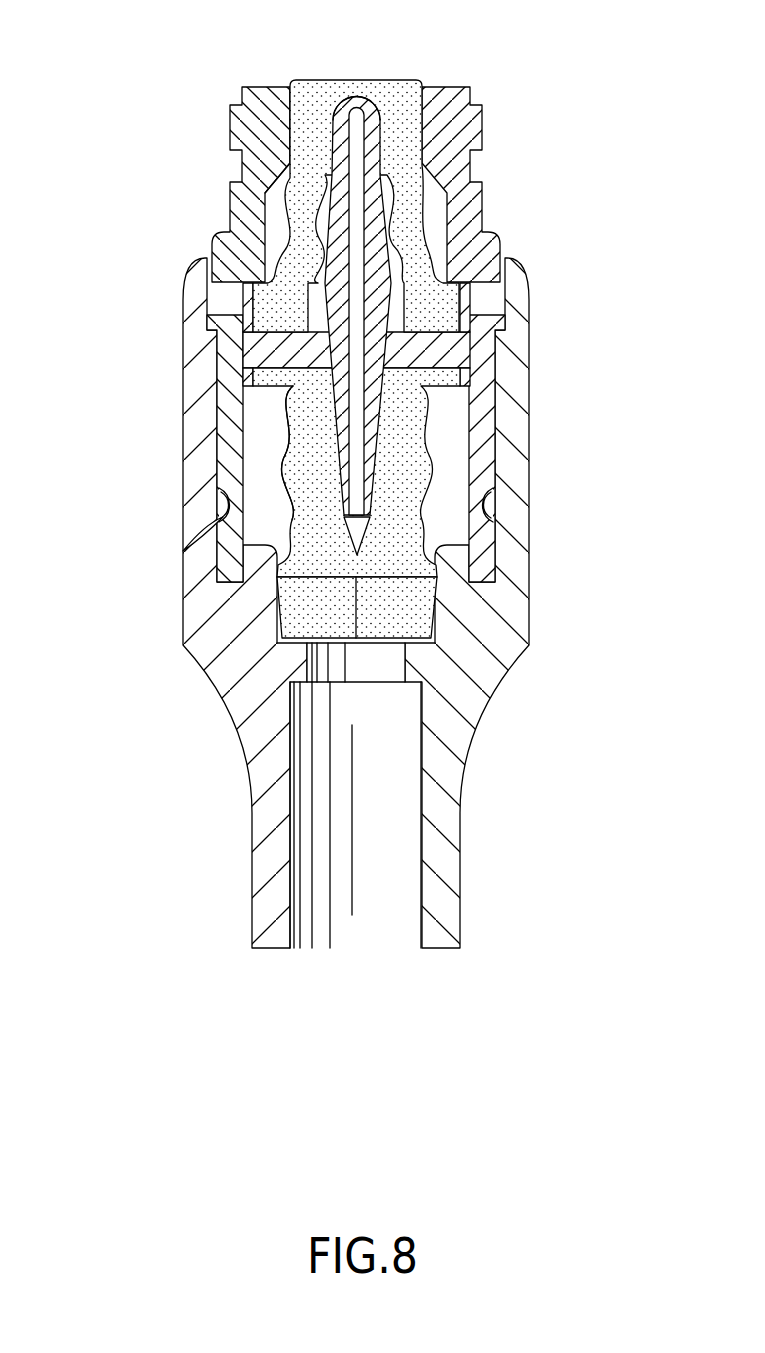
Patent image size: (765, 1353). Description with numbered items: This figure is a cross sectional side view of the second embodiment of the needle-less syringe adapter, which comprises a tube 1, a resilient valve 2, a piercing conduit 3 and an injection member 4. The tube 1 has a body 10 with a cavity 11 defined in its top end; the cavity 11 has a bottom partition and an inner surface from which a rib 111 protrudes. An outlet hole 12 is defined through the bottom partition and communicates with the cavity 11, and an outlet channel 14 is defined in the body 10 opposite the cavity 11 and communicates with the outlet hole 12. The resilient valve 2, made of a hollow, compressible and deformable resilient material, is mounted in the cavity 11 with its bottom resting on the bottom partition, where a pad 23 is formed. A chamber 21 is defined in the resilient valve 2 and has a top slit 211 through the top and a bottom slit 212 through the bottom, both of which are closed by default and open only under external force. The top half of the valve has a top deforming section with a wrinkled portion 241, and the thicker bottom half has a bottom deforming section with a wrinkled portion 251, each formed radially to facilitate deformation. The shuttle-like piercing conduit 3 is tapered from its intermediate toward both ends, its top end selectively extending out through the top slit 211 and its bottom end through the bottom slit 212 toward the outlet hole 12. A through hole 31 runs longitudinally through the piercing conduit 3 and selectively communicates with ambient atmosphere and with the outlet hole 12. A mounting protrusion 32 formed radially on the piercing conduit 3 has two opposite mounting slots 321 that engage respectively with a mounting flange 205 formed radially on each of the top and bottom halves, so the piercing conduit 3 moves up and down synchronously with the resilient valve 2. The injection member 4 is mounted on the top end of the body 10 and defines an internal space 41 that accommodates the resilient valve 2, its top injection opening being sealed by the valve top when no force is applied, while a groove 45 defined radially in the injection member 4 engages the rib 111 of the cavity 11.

The tube 1 is at (367, 541).
The body 10 is at (492, 672).
The cavity 11 is at (222, 340).
The rib 111 is at (220, 503).
The outlet hole 12 is at (363, 670).
The outlet channel 14 is at (393, 890).
The resilient valve 2 is at (355, 469).
The mounting flange 205 is at (442, 288).
The chamber 21 is at (323, 415).
The top slit 211 is at (357, 96).
The bottom slit 212 is at (355, 608).
The pad 23 is at (288, 641).
The wrinkled portion 241 is at (292, 180).
The wrinkled portion 251 is at (290, 425).
The piercing conduit 3 is at (298, 266).
The through hole 31 is at (358, 118).
The mounting protrusion 32 is at (445, 344).
The mounting slot 321 is at (456, 312).
The injection member 4 is at (358, 169).
The internal space 41 is at (400, 130).
The groove 45 is at (185, 548).